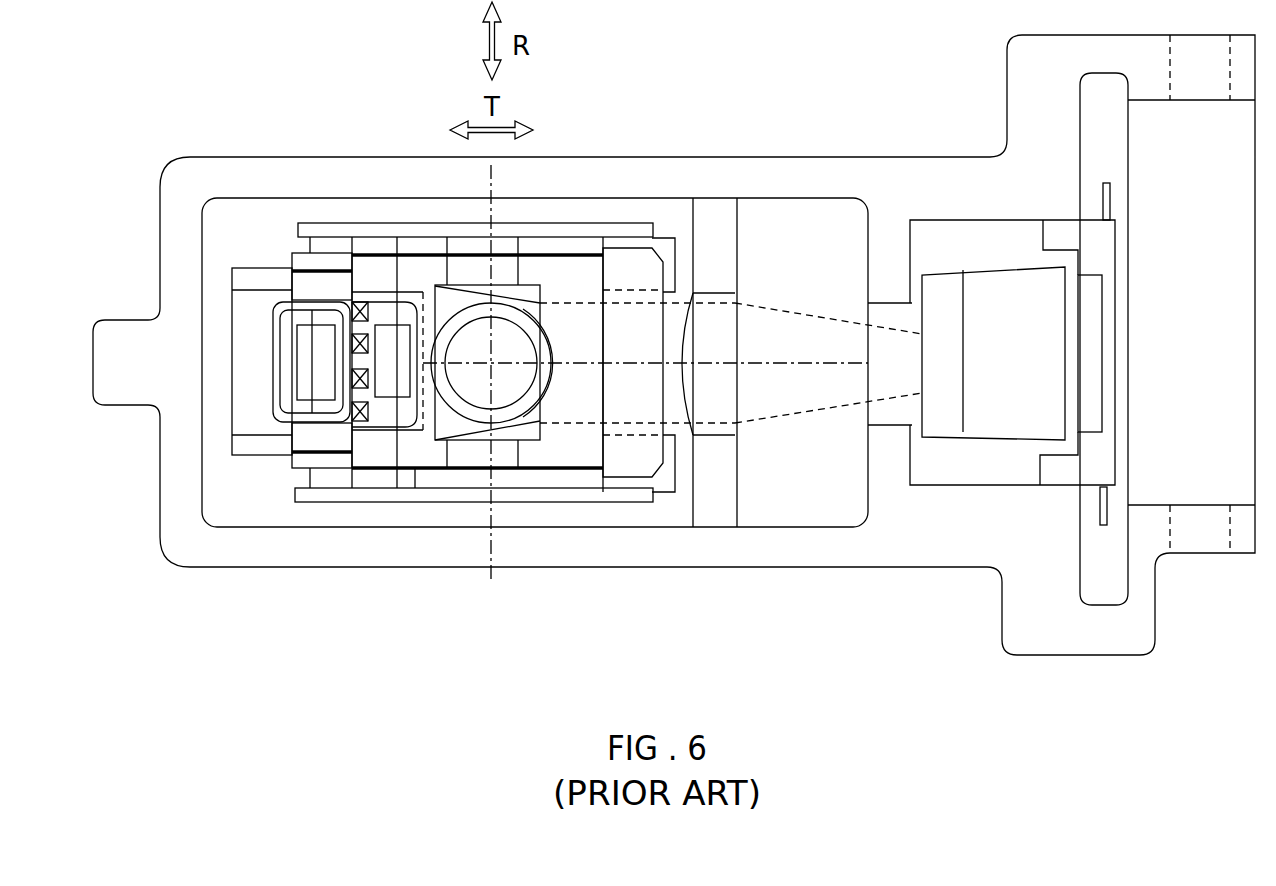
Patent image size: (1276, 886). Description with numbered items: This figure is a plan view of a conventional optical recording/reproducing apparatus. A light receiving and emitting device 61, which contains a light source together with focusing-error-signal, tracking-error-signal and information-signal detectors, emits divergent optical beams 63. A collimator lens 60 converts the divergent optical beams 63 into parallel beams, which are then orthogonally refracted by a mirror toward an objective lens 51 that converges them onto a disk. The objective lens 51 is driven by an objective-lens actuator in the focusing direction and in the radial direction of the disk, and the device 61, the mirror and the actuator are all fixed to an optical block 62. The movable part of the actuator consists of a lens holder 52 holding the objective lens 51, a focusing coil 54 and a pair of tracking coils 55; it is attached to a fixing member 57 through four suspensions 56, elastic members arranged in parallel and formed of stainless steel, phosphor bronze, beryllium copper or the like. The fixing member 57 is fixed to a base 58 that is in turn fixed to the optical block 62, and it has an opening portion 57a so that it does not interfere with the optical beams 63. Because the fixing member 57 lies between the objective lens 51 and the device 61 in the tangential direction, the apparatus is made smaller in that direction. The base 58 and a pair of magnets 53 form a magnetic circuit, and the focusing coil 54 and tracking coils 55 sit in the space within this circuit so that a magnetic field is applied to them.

The objective lens 51 is at (507, 385).
The lens holder 52 is at (252, 280).
The magnets 53 is at (322, 383).
The focusing coil 54 is at (278, 413).
The tracking coils 55 is at (360, 400).
The suspensions 56 is at (560, 257).
The fixing member 57 is at (622, 268).
The opening portion 57a is at (635, 318).
The base 58 is at (317, 482).
The collimator lens 60 is at (713, 407).
The light receiving and emitting device 61 is at (1013, 397).
The optical block 62 is at (1112, 627).
The optical beams 63 is at (800, 418).